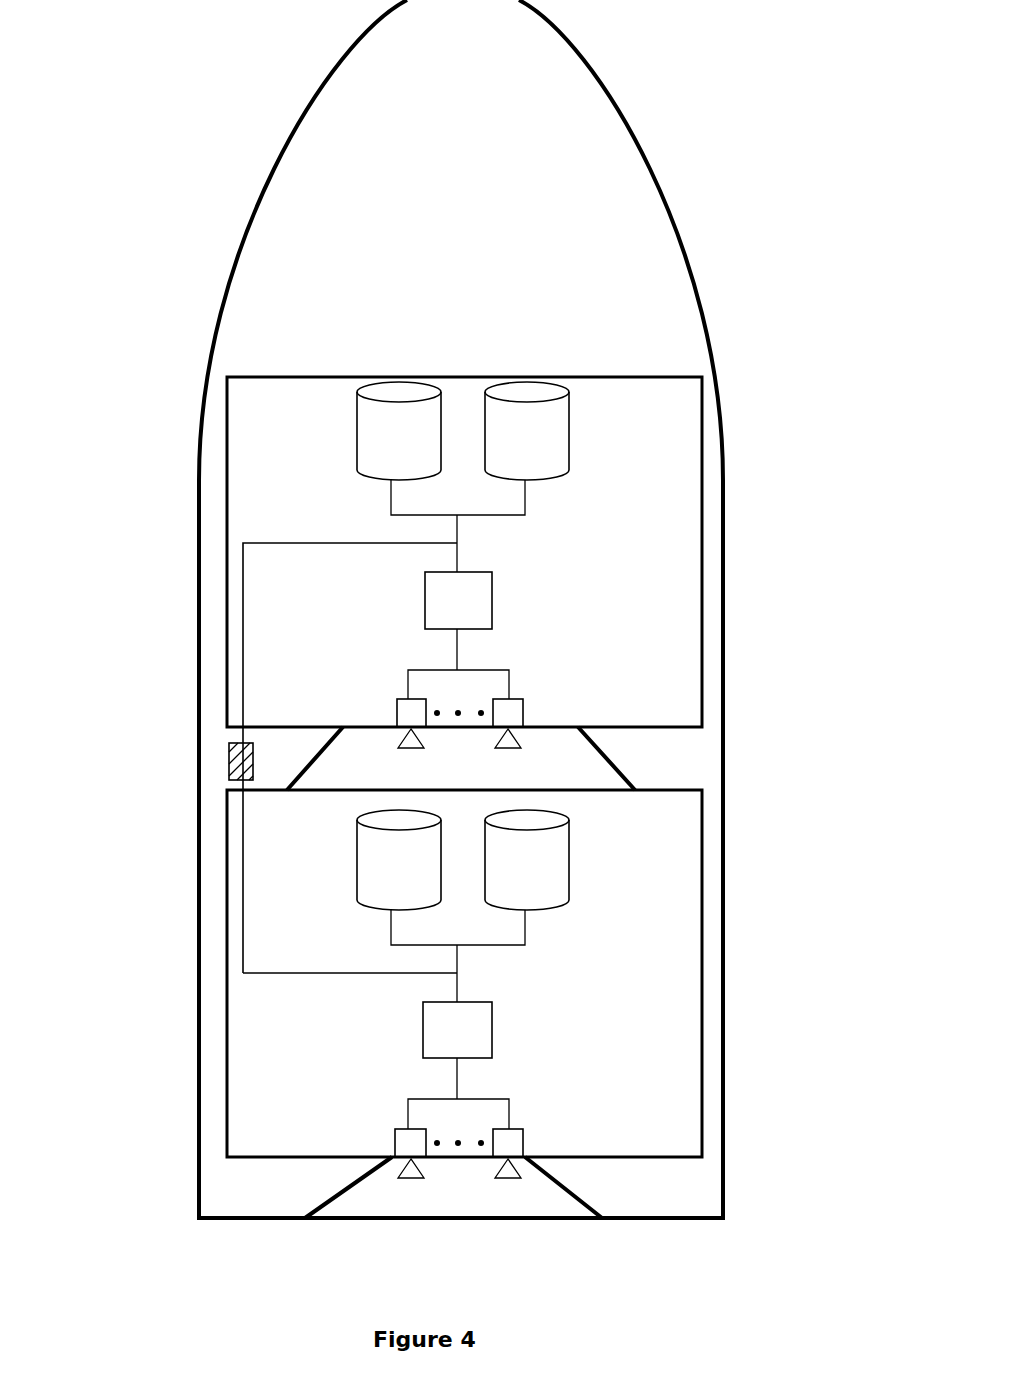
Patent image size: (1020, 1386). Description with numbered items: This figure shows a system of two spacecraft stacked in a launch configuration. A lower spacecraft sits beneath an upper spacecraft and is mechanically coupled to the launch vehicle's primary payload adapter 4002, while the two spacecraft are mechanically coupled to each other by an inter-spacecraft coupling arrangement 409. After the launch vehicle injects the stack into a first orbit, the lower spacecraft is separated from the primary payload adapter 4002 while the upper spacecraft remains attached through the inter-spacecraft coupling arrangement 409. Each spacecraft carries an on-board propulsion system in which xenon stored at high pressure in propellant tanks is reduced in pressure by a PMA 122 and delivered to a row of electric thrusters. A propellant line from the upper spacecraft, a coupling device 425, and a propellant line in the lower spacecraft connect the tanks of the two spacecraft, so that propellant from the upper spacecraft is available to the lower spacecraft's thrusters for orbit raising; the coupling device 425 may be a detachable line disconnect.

The PMA 122 is at (457, 815).
The coupling device 425 is at (229, 752).
The inter-spacecraft coupling arrangement 409 is at (608, 757).
The primary payload adapter 4002 is at (575, 1196).